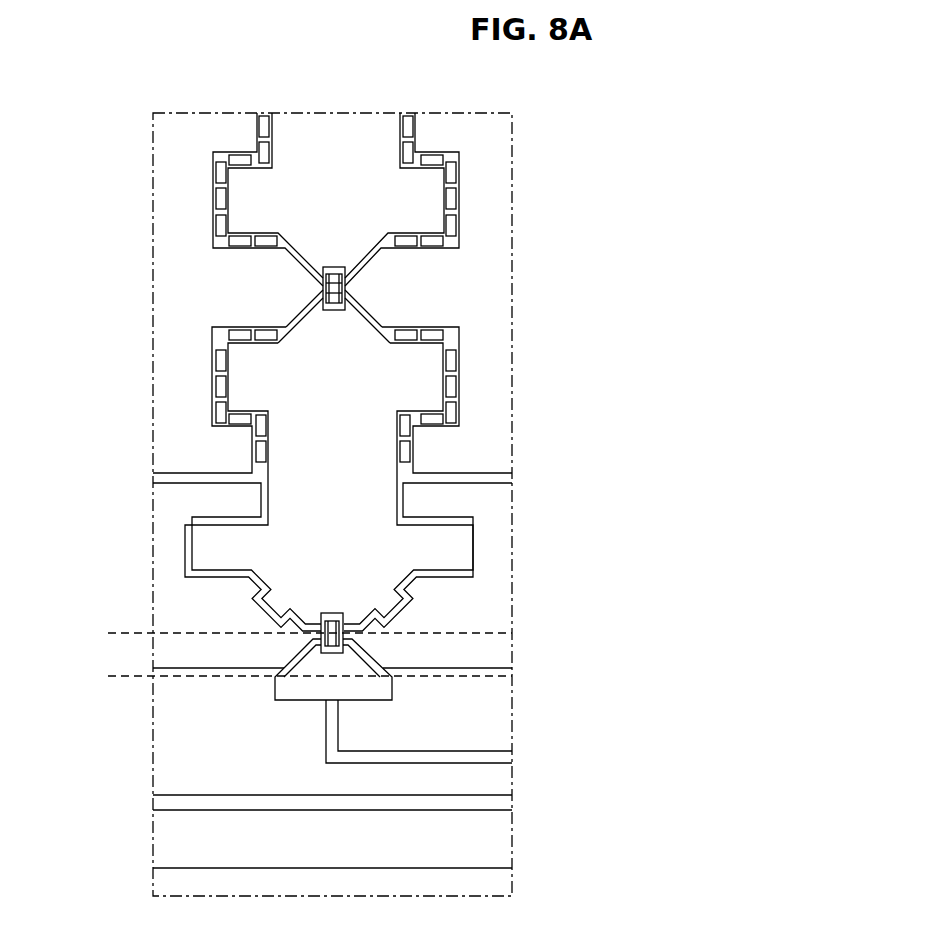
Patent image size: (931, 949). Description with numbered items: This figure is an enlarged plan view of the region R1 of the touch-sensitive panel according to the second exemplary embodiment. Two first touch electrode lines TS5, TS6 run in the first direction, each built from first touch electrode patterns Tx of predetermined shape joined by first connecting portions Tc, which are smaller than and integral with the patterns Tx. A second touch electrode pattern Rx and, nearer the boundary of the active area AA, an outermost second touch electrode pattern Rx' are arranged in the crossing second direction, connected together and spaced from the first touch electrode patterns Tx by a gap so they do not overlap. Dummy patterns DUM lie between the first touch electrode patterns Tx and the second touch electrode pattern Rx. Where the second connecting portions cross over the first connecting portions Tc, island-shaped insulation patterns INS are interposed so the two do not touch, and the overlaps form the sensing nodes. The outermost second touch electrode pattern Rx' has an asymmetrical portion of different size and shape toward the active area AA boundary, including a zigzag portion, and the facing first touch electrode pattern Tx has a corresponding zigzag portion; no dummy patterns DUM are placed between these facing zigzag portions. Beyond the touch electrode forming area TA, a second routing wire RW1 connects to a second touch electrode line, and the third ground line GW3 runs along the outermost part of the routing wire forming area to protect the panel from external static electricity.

The region R1 is at (197, 92).
The first touch electrode line TS5 is at (526, 296).
The first touch electrode line TS6 is at (526, 584).
The second touch electrode pattern Rx is at (336, 199).
The outermost second touch electrode pattern Rx' is at (332, 548).
The first touch electrode pattern Tx is at (165, 390).
The dummy pattern DUM is at (216, 198).
The first connecting portion Tc is at (346, 291).
The insulation pattern INS is at (323, 291).
The active area AA is at (297, 633).
The touch electrode forming area TA is at (297, 676).
The second routing wire RW1 is at (512, 760).
The third ground line GW3 is at (512, 805).